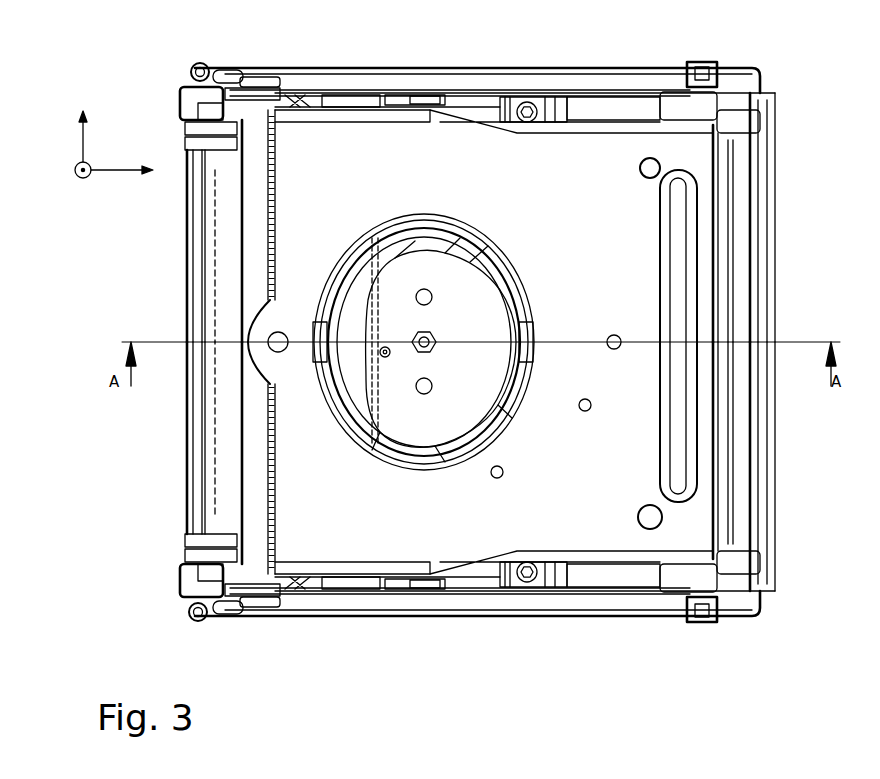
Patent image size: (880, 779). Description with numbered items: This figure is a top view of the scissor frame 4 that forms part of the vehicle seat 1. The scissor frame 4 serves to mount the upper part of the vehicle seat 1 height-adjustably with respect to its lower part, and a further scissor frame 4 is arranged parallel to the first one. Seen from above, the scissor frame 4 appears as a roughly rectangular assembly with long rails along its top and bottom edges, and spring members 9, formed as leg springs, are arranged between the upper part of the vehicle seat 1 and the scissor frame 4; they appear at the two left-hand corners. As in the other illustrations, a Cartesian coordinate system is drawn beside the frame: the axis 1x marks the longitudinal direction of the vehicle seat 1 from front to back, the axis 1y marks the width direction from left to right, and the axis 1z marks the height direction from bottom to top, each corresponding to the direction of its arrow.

The vehicle seat 1 is at (802, 254).
The scissor frame 4 is at (537, 54).
The spring member 9 is at (203, 62).
The longitudinal direction axis 1x is at (120, 172).
The width direction axis 1y is at (82, 133).
The height direction axis 1z is at (74, 181).